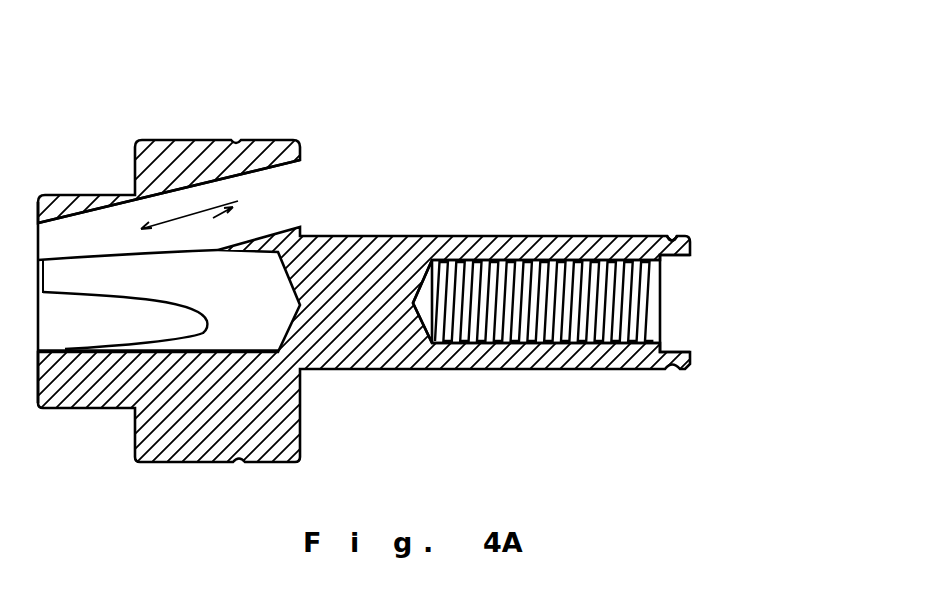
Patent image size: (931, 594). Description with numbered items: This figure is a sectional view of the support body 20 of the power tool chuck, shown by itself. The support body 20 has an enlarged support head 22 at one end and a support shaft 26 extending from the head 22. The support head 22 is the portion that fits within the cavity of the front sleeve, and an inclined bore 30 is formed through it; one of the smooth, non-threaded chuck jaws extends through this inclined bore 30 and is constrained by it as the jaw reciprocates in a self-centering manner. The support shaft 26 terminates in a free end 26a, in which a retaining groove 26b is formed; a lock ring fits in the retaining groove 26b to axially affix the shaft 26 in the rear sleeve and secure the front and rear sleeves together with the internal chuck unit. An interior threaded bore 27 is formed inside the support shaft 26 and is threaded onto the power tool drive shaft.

The support body 20 is at (465, 246).
The support head 22 is at (200, 142).
The support shaft 26 is at (510, 237).
The free end 26a is at (693, 246).
The retaining groove 26b is at (670, 243).
The threaded bore 27 is at (627, 288).
The inclined bore 30 is at (279, 201).